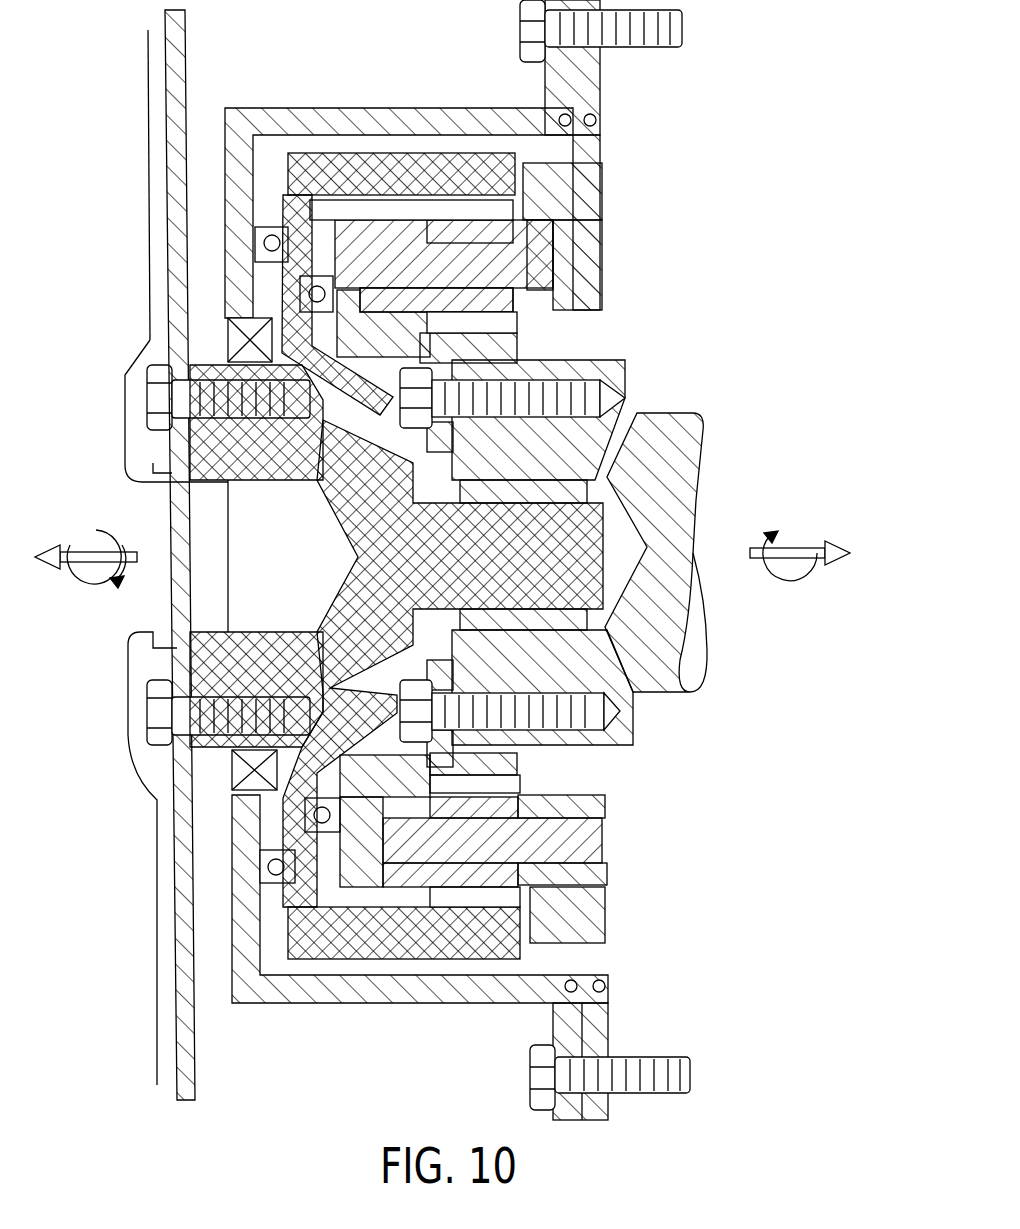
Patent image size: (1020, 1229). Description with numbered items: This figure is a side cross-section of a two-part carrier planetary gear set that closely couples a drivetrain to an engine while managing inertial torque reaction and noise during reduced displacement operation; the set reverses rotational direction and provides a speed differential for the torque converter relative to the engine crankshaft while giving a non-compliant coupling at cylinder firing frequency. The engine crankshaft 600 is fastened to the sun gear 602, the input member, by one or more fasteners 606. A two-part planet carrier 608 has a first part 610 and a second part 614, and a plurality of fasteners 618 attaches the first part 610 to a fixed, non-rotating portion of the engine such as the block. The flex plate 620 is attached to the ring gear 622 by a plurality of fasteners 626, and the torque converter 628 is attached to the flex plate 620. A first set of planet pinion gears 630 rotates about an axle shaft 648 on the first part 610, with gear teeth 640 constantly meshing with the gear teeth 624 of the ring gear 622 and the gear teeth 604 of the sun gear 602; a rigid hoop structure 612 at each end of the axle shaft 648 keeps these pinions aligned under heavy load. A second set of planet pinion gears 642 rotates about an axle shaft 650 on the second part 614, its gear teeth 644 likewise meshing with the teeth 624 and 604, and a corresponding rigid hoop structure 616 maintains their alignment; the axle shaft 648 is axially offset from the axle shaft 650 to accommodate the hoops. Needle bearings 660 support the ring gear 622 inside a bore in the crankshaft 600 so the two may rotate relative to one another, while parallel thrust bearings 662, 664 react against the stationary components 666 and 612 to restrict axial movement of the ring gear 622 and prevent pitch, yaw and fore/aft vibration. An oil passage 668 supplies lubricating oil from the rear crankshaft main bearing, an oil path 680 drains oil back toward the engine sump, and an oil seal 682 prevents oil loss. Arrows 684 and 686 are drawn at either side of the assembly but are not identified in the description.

The crankshaft 600 is at (690, 455).
The sun gear 602 is at (505, 345).
The gear teeth of sun gear 604 is at (520, 318).
The fasteners 606 is at (400, 397).
The two-part planet carrier 608 is at (615, 252).
The first part of planet carrier 610 is at (608, 155).
The rigid hoop structure 612 is at (353, 240).
The second part of planet carrier 614 is at (612, 305).
The rigid hoop structure 616 is at (318, 328).
The fasteners 618 is at (678, 1057).
The flex plate 620 is at (186, 44).
The ring gear 622 is at (207, 640).
The gear teeth of ring gear 624 is at (333, 207).
The fasteners 626 is at (180, 395).
The torque converter 628 is at (150, 100).
The first set of planet pinion gears 630 is at (500, 234).
The gear teeth of first set of planet pinion gears 640 is at (480, 210).
The second set of planet pinion gears 642 is at (490, 873).
The gear teeth of second set of planet pinion gears 644 is at (512, 793).
The axle shaft 648 is at (520, 268).
The axle shaft 650 is at (585, 835).
The needle bearings 660 is at (545, 622).
The thrust bearing 662 is at (300, 803).
The thrust bearing 664 is at (266, 867).
The stationary component 666 is at (310, 108).
The oil passage 668 is at (636, 412).
The oil path 680 is at (605, 958).
The oil seal 682 is at (268, 338).
The rotation arrow 684 is at (825, 548).
The rotation arrow 686 is at (62, 552).